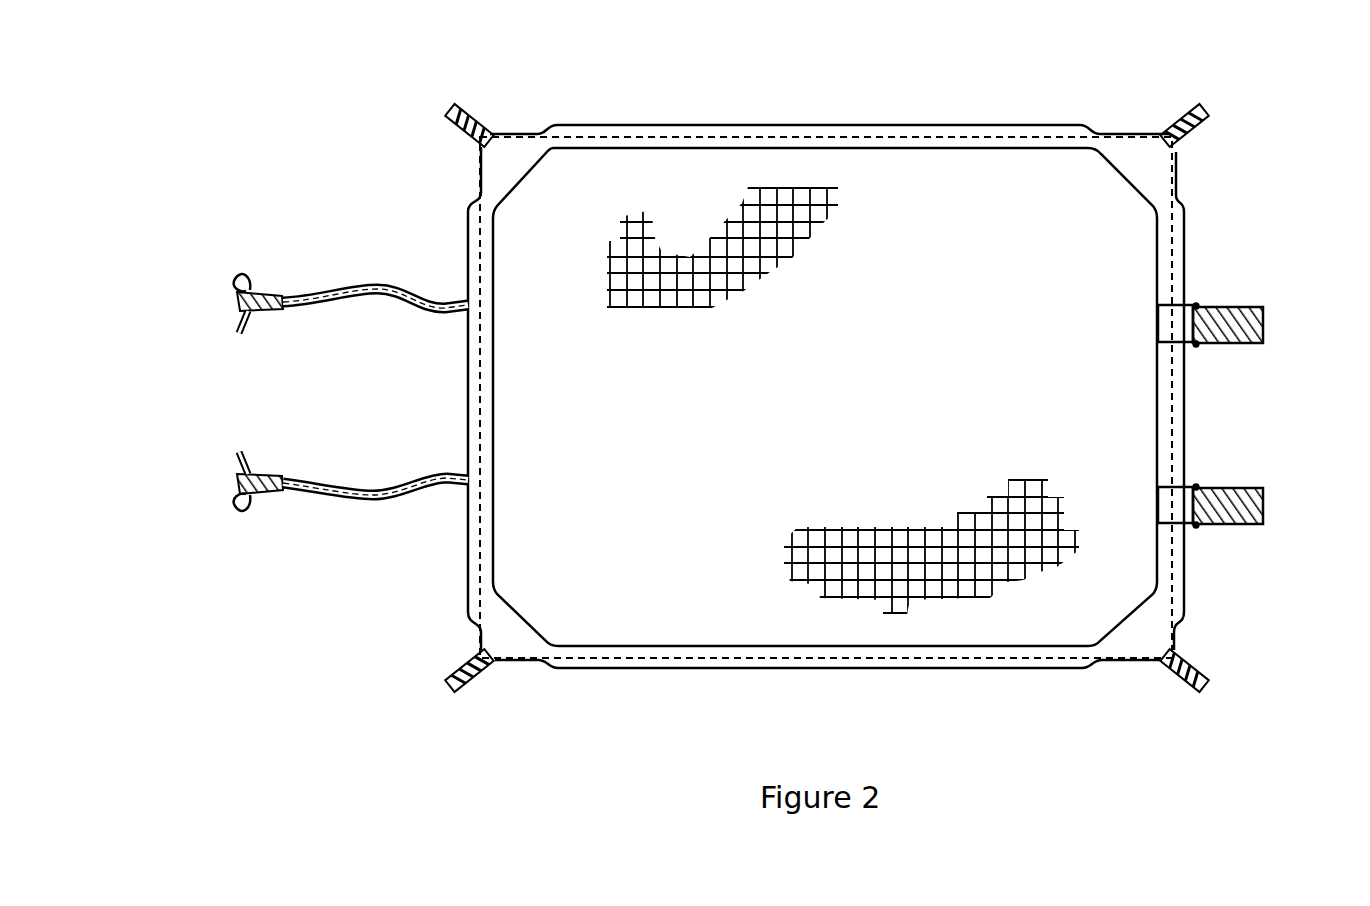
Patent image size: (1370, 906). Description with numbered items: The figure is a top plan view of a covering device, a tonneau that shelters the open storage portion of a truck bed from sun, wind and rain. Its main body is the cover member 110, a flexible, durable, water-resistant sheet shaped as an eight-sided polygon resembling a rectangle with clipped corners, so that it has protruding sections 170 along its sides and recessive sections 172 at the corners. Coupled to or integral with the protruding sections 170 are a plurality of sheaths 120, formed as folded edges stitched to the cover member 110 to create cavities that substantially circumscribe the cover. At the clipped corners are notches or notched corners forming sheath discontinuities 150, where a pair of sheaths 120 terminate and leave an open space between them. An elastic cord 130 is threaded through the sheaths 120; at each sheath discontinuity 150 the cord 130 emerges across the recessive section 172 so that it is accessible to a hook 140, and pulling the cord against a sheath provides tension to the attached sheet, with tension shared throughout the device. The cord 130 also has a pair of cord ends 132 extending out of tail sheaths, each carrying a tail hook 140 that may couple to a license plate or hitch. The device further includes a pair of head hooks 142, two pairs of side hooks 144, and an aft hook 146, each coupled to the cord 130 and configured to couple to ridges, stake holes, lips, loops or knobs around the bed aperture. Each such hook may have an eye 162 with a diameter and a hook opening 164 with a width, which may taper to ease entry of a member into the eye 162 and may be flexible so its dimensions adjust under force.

The cover member 110 is at (825, 347).
The sheath 120 is at (828, 426).
The cord 130 is at (835, 348).
The hook 140 is at (779, 262).
The head hook 142 is at (1247, 468).
The side hook 144 is at (423, 707).
The aft hook 146 is at (301, 268).
The cord end 132 is at (183, 303).
The eye 162 is at (195, 527).
The hook opening 164 is at (292, 523).
The protruding section 170 is at (726, 396).
The recessive section 172 is at (852, 401).
The sheath discontinuity 150 is at (797, 398).